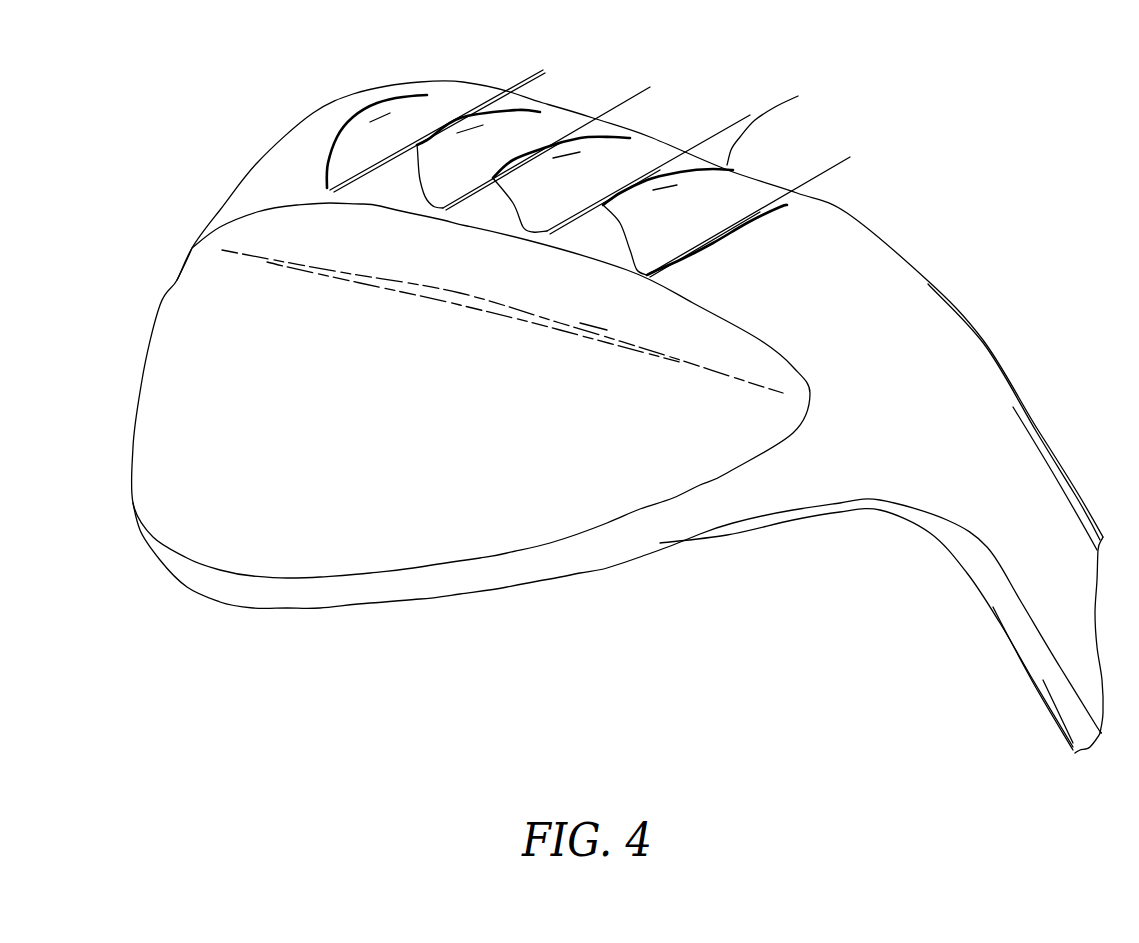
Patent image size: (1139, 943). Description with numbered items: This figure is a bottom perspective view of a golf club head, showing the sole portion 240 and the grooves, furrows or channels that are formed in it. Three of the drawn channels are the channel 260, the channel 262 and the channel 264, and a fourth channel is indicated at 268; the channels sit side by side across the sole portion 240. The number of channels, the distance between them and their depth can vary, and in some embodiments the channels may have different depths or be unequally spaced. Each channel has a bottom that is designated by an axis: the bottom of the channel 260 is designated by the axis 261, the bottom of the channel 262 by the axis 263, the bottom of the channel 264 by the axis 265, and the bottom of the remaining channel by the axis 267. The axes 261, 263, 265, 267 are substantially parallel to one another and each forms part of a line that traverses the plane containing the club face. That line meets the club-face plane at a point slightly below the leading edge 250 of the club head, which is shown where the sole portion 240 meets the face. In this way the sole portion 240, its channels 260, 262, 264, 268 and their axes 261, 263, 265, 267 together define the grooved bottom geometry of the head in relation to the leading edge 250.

The sole portion 240 is at (285, 150).
The leading edge 250 is at (798, 96).
The channel 260 is at (431, 94).
The axis 261 is at (530, 77).
The channel 262 is at (547, 117).
The axis 263 is at (637, 92).
The channel 264 is at (652, 143).
The axis 265 is at (748, 117).
The axis 267 is at (843, 162).
The fourth channel 268 is at (755, 183).